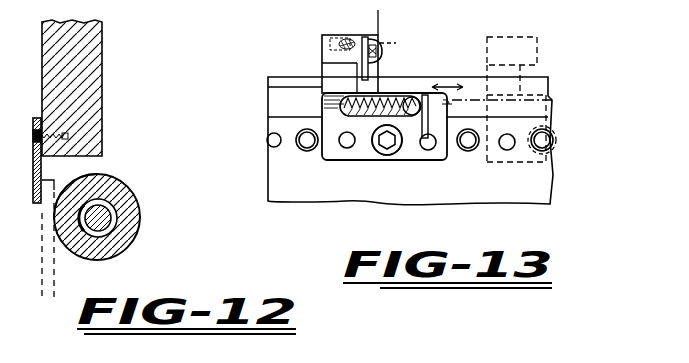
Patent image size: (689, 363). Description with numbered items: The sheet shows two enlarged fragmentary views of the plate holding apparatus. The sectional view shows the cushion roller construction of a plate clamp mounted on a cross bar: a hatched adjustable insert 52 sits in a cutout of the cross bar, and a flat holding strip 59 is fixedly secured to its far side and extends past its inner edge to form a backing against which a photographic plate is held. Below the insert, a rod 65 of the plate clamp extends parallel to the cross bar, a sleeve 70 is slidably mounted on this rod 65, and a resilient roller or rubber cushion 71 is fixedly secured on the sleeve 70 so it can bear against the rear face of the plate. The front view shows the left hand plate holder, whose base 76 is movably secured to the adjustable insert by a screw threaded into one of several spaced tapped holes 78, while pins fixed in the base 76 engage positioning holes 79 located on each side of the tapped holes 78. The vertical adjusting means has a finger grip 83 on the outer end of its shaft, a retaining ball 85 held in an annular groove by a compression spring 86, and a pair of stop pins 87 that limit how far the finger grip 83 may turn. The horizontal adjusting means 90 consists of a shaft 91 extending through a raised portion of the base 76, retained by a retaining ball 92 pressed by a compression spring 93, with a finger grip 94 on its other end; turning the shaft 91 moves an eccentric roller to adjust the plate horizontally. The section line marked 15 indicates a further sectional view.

In FIG. 12, the adjustable insert 52 is at (87, 80).
In FIG. 12, the flat holding strip 59 is at (45, 176).
In FIG. 13, the flat holding strip 59 is at (528, 115).
In FIG. 12, the resilient roller 71 is at (123, 200).
In FIG. 12, the sleeve 70 is at (98, 220).
In FIG. 12, the rod 65 is at (90, 242).
In FIG. 13, the base 76 is at (322, 118).
In FIG. 13, the tapped hole 78 is at (297, 147).
In FIG. 13, the positioning hole 79 is at (512, 148).
In FIG. 13, the finger grip 83 is at (447, 158).
In FIG. 13, the retaining ball 85 is at (410, 104).
In FIG. 13, the compression spring 86 is at (394, 97).
In FIG. 13, the stop pin 87 is at (452, 94).
In FIG. 13, the horizontal adjusting means 90 is at (364, 40).
In FIG. 13, the shaft 91 is at (375, 50).
In FIG. 13, the retaining ball 92 is at (332, 34).
In FIG. 13, the compression spring 93 is at (337, 51).
In FIG. 13, the finger grip 94 is at (357, 70).
In FIG. 13, the section line 15- 15 is at (428, 28).